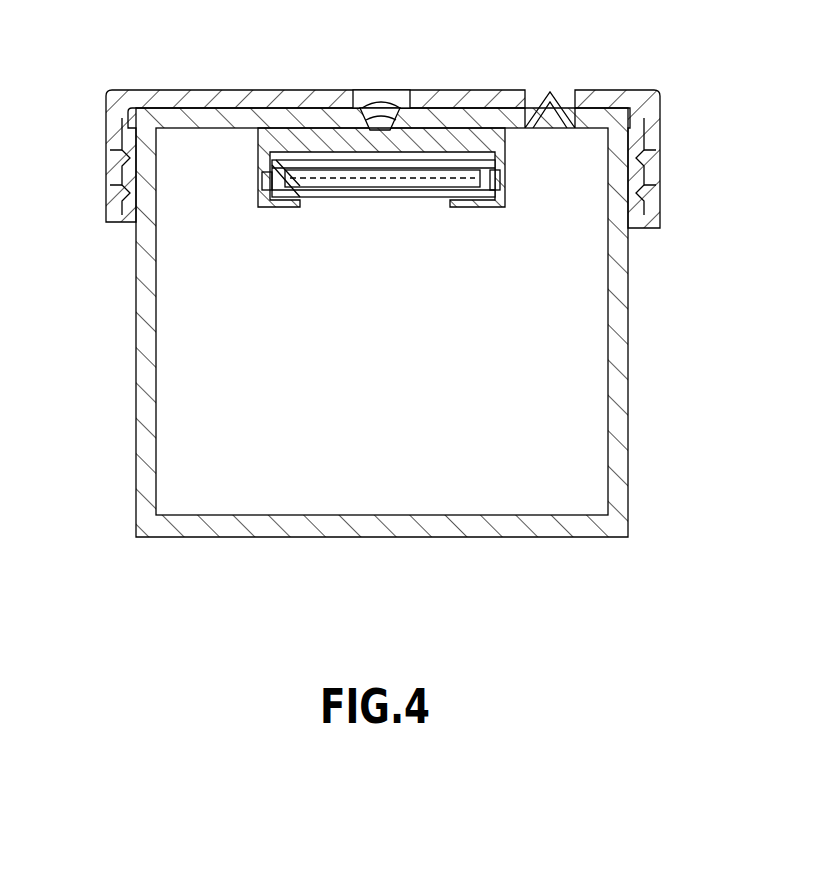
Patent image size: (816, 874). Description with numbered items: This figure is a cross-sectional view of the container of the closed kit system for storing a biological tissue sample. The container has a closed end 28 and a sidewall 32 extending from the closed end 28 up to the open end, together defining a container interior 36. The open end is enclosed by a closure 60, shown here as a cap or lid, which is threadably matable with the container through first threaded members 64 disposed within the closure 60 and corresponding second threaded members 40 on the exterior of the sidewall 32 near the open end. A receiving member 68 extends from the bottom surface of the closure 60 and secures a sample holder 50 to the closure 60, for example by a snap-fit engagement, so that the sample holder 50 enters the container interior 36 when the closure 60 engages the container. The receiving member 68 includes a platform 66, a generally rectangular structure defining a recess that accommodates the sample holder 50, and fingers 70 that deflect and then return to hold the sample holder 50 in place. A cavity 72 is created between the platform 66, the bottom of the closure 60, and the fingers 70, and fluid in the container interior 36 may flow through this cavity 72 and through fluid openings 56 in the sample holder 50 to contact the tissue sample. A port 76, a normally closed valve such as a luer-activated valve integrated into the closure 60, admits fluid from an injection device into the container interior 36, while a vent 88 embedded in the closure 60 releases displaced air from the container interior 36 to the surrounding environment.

The closed end 28 is at (385, 538).
The sidewall 32 is at (628, 368).
The container interior 36 is at (520, 375).
The second threaded members 40 is at (655, 170).
The sample holder 50 is at (378, 196).
The fluid openings 56 is at (332, 182).
The closure 60 is at (640, 98).
The first threaded members 64 is at (140, 202).
The platform 66 is at (505, 138).
The receiving member 68 is at (240, 235).
The fingers 70 is at (262, 178).
The cavity 72 is at (412, 166).
The port 76 is at (378, 92).
The vent 88 is at (553, 97).